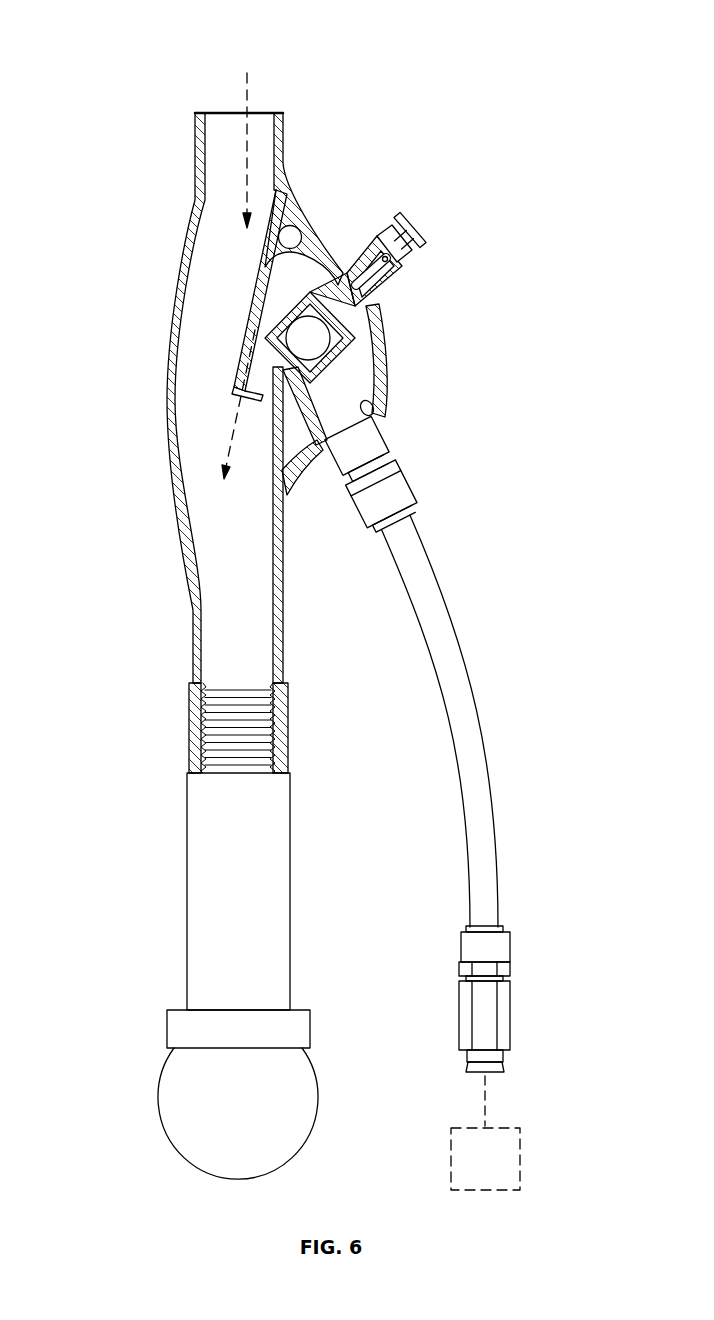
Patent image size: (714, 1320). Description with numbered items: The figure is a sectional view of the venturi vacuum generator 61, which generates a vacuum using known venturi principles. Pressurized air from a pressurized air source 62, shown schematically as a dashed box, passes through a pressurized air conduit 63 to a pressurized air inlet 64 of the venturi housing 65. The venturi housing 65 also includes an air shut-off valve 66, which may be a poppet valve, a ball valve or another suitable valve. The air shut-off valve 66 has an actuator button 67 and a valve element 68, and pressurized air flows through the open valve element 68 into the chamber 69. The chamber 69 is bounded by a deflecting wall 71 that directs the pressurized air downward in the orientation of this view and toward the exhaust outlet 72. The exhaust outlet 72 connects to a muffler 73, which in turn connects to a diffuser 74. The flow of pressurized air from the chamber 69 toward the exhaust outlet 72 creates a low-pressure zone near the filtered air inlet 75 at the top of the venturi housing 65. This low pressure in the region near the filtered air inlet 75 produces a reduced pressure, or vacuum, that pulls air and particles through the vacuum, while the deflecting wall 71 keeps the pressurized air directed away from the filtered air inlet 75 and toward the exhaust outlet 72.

The venturi vacuum generator 61 is at (187, 593).
The pressurized air source 62 is at (520, 1157).
The pressurized air conduit 63 is at (480, 717).
The pressurized air inlet 64 is at (383, 420).
The venturi housing 65 is at (219, 398).
The air shut-off valve 66 is at (430, 669).
The actuator button 67 is at (414, 224).
The valve element 68 is at (330, 337).
The chamber 69 is at (313, 280).
The deflecting wall 71 is at (255, 297).
The exhaust outlet 72 is at (203, 733).
The muffler 73 is at (187, 879).
The diffuser 74 is at (165, 1132).
The filtered air inlet 75 is at (207, 126).